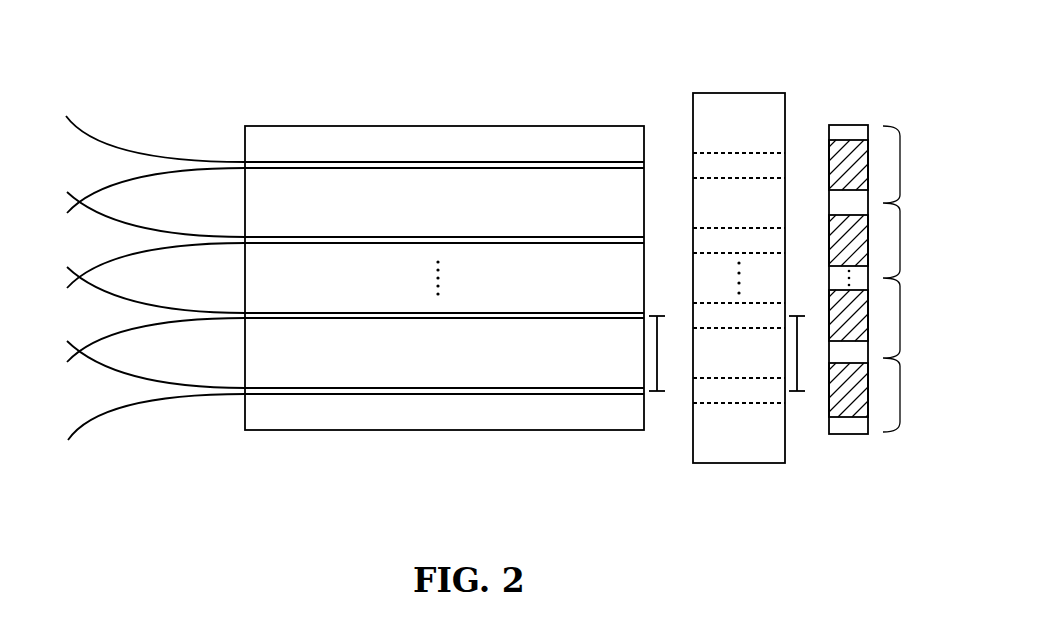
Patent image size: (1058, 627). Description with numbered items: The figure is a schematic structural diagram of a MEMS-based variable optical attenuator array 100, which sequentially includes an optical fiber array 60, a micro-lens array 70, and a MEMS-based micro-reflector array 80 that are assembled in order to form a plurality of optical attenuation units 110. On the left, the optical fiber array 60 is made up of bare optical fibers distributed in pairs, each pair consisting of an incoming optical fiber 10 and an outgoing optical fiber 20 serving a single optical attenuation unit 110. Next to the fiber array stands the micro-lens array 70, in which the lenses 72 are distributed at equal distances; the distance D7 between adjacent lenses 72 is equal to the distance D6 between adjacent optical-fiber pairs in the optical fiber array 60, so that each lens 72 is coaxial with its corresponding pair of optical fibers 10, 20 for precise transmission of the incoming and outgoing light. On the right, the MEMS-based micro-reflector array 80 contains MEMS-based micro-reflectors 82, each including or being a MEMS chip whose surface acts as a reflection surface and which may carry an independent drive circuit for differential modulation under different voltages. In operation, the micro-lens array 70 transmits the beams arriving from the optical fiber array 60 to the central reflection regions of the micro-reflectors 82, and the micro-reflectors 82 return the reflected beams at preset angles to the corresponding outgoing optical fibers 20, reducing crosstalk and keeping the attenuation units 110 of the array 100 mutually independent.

The MEMS-based variable optical attenuator (VOA) array 100 is at (398, 62).
The incoming optical fiber 10 is at (105, 143).
The outgoing optical fiber 20 is at (119, 408).
The optical fiber array 60 is at (503, 145).
The micro-lens array 70 is at (731, 278).
The lens 72 is at (725, 164).
The MEMS-based micro-reflector array 80 is at (868, 277).
The MEMS-based micro-reflector 82 is at (828, 168).
The optical attenuation unit 110 is at (900, 164).
The distance between adjacent optical-fiber pairs D6 is at (667, 353).
The distance between adjacent lenses D7 is at (806, 353).